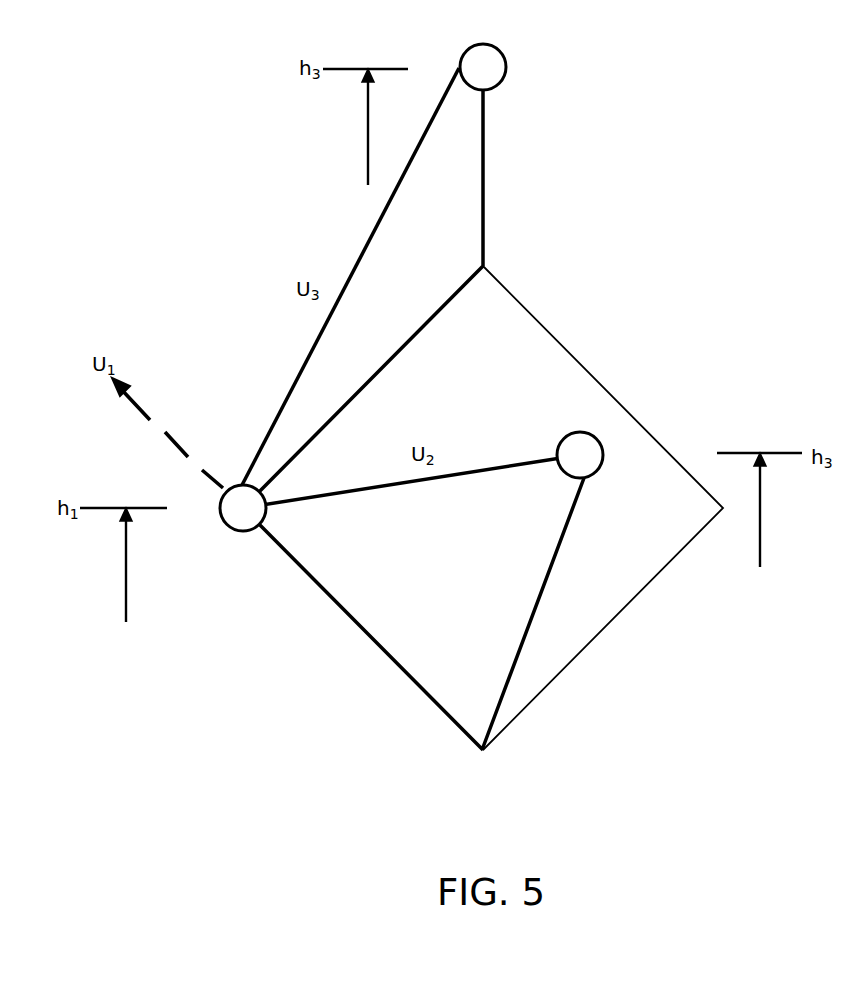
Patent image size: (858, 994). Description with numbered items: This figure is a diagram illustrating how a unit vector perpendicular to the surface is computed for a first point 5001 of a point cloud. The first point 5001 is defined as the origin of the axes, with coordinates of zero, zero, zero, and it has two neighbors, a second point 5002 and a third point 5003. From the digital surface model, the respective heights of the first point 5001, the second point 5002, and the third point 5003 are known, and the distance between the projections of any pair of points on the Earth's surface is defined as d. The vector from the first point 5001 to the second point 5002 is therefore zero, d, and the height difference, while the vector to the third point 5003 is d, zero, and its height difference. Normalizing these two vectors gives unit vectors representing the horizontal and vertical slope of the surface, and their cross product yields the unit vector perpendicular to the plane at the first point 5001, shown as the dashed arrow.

The first point 5001 is at (225, 528).
The second point 5002 is at (603, 455).
The third point 5003 is at (505, 62).